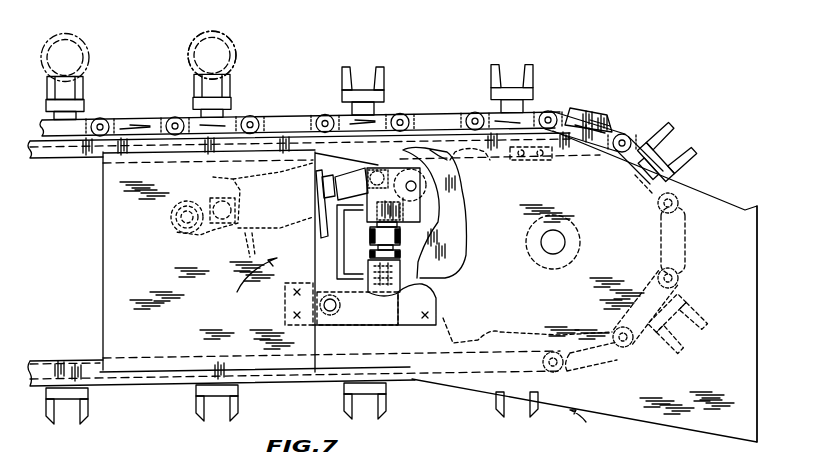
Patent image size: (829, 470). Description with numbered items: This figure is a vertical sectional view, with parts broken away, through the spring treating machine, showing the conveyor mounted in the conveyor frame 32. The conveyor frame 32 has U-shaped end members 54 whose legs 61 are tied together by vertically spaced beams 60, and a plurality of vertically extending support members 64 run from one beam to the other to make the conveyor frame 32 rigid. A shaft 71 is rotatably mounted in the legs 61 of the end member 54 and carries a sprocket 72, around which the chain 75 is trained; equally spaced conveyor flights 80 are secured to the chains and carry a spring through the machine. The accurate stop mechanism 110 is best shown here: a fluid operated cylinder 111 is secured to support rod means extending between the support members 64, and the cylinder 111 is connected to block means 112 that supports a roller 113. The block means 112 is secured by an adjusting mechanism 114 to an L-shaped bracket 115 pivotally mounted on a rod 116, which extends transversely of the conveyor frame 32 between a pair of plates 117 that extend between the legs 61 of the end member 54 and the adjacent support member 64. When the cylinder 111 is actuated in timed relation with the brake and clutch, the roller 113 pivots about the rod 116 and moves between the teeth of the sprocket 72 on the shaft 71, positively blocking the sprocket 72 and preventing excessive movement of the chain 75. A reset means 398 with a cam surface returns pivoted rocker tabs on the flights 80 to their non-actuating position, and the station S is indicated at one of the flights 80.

The conveyor frame 32 is at (625, 307).
The end member 54 is at (711, 193).
The beam 60 is at (80, 167).
The leg 61 is at (756, 207).
The vertically extending support member 64 is at (103, 259).
The shaft 71 is at (580, 234).
The sprocket 72 is at (586, 115).
The chain 75 is at (303, 116).
The conveyor flight 80 is at (92, 91).
The accurate stop mechanism 110 is at (295, 262).
The fluid operated cylinder 111 is at (214, 178).
The block means 112 is at (397, 228).
The roller 113 is at (410, 223).
The adjusting mechanism 114 is at (400, 256).
The L-shaped bracket 115 is at (417, 285).
The rod 116 is at (340, 330).
The plate 117 is at (381, 331).
The reset means 398 is at (606, 117).
The station S is at (235, 54).